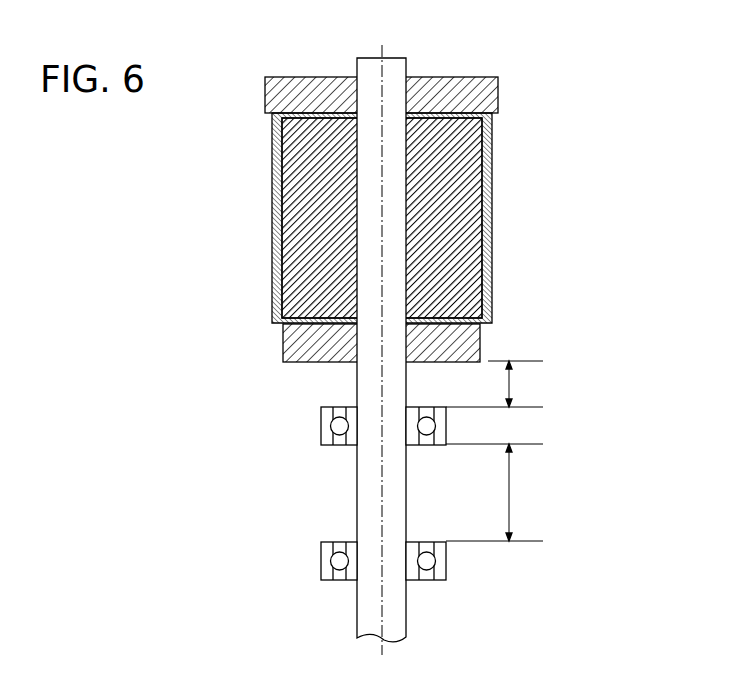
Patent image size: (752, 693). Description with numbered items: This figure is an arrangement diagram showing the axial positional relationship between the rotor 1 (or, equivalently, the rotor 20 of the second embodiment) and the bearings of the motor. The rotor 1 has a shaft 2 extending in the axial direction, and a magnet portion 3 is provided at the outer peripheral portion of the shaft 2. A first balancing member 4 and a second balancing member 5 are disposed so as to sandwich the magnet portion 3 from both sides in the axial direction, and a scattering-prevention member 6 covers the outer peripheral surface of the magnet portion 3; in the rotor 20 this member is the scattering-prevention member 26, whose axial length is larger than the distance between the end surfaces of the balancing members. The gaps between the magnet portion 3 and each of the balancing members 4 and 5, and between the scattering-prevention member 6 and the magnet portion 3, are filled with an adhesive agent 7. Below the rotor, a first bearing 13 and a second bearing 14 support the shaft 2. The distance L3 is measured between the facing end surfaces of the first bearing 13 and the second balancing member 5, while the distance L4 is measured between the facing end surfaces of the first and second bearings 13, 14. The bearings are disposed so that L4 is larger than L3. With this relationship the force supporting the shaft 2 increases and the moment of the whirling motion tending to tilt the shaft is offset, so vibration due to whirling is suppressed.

The rotor 1 is at (410, 332).
The rotor 20 is at (498, 58).
The shaft 2 is at (397, 628).
The magnet portion 3 is at (300, 192).
The first balancing member 4 is at (277, 98).
The second balancing member 5 is at (282, 347).
The scattering-prevention member 6 is at (493, 200).
The scattering-prevention member 26 is at (419, 218).
The adhesive agent 7 is at (495, 267).
The first bearing 13 is at (328, 450).
The second bearing 14 is at (320, 552).
The distance L3 is at (515, 383).
The distance L4 is at (515, 495).